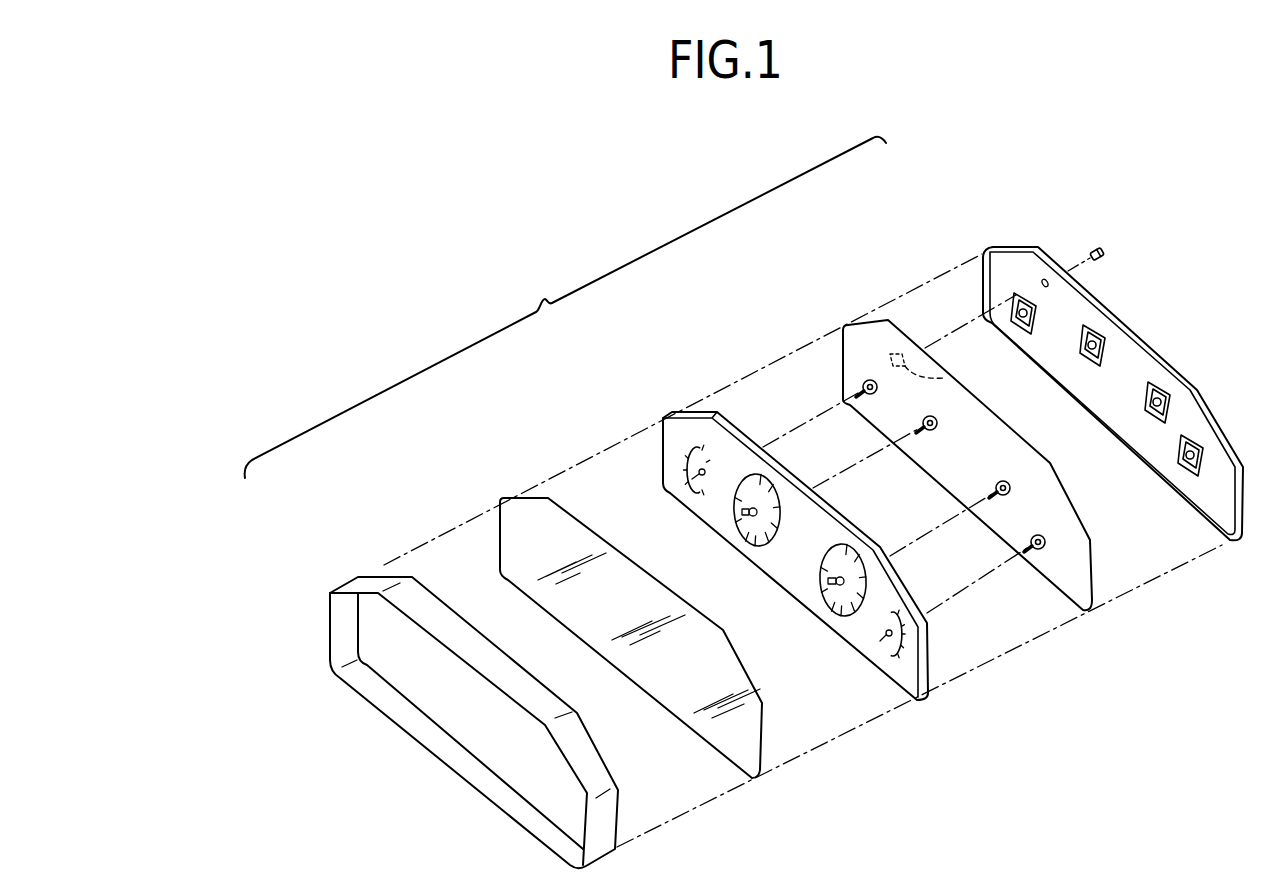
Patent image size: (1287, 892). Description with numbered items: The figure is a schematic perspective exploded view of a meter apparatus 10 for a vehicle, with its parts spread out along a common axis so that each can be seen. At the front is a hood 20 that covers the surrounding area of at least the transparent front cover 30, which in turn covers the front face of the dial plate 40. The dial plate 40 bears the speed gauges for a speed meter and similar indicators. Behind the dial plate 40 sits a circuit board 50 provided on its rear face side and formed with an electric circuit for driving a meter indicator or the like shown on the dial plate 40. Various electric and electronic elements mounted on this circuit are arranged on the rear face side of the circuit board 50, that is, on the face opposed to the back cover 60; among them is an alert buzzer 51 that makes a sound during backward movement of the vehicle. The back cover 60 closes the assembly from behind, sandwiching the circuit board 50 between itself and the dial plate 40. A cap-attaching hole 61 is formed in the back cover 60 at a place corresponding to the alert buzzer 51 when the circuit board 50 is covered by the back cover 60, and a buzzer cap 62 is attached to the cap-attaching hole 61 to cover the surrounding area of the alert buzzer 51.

The meter apparatus 10 is at (565, 307).
The hood 20 is at (377, 575).
The front cover 30 is at (525, 495).
The dial plate 40 is at (683, 412).
The circuit board 50 is at (872, 317).
The alert buzzer 51 is at (943, 378).
The back cover 60 is at (1003, 246).
The cap-attaching hole 61 is at (1043, 278).
The buzzer cap 62 is at (1100, 245).